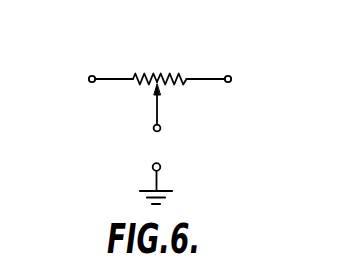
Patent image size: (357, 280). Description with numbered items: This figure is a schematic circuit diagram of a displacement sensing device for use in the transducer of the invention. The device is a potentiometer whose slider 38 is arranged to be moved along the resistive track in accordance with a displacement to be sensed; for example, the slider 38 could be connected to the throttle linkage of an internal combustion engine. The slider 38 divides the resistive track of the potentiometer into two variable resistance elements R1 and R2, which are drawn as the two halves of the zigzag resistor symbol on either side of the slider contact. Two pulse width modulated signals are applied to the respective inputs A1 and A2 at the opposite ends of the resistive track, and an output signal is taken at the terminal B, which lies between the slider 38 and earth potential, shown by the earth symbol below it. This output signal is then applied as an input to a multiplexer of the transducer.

The slider 38 is at (157, 107).
The variable resistance element R1 is at (142, 67).
The variable resistance element R2 is at (172, 67).
The input A1 is at (96, 76).
The input A2 is at (225, 78).
The output B is at (160, 170).